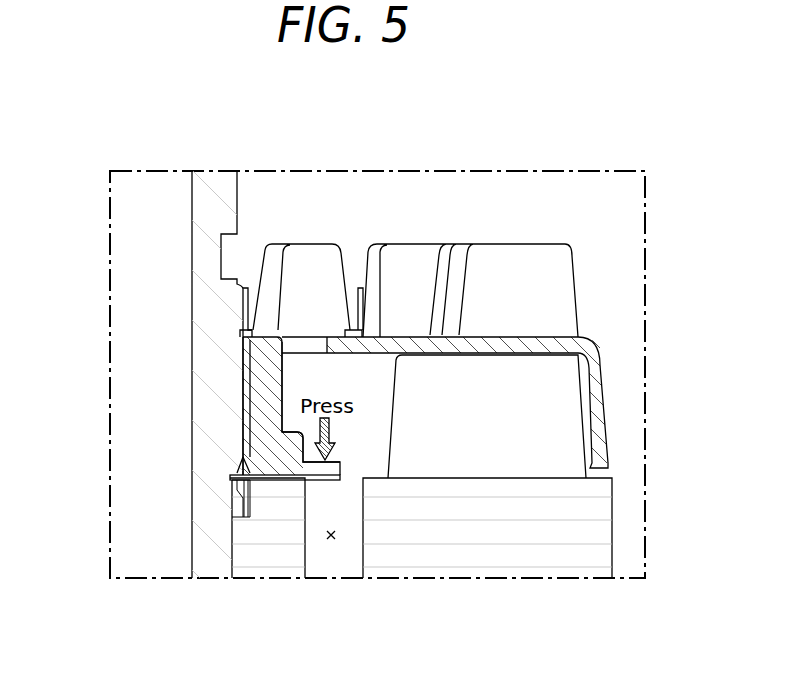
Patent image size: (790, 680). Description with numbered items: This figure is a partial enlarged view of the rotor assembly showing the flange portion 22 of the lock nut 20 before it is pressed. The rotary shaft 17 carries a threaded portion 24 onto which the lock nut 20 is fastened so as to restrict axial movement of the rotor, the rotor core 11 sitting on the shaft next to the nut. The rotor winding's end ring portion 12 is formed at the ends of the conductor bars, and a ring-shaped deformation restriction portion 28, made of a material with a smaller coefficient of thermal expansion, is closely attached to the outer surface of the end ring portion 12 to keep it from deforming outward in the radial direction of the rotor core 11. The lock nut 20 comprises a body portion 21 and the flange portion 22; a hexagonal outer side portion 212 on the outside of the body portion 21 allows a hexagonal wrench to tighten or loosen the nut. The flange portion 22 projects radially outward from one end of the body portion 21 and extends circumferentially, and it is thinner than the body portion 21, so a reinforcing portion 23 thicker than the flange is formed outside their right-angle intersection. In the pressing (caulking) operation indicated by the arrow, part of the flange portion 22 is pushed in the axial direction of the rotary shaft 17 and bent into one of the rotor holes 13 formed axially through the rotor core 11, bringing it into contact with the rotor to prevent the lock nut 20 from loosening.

The rotor core 11 is at (600, 532).
The end ring portion 12 is at (557, 413).
The rotor hole 13 is at (331, 545).
The rotary shaft 17 is at (213, 302).
The lock nut 20 is at (243, 403).
The body portion 21 is at (262, 383).
The hexagonal outer side portion 212 is at (298, 373).
The flange portion 22 is at (330, 470).
The reinforcing portion 23 is at (290, 432).
The threaded portion 24 is at (245, 370).
The deformation restriction portion 28 is at (511, 345).